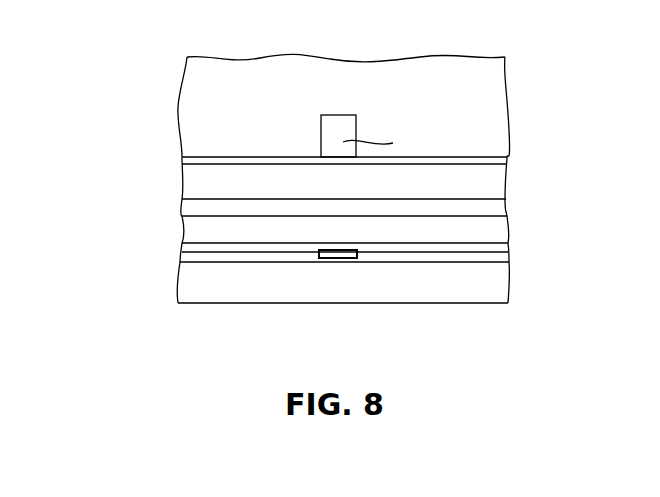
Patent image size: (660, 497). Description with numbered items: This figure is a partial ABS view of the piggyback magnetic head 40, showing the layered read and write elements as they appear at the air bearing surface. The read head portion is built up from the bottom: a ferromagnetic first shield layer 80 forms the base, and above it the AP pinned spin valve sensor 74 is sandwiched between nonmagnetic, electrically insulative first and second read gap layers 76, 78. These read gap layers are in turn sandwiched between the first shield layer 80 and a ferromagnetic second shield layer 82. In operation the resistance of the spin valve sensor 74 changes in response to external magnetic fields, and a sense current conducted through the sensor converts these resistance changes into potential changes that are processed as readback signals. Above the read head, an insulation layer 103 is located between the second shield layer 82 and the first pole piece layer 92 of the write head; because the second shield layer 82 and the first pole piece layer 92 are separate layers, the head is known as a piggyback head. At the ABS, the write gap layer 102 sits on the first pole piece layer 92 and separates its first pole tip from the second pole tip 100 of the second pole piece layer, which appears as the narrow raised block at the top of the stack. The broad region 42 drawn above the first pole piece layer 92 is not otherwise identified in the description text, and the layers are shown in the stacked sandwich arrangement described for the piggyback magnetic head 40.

The piggyback magnetic head 40 is at (527, 72).
The upper cladding region 42 is at (192, 83).
The second pole tip 100 is at (337, 123).
The write gap layer 102 is at (255, 160).
The first pole piece layer 92 is at (192, 180).
The insulation layer 103 is at (498, 208).
The second shield layer 82 is at (187, 232).
The second read gap layer 78 is at (465, 248).
The AP pinned spin valve sensor 74 is at (337, 258).
The first read gap layer 76 is at (242, 262).
The first shield layer 80 is at (497, 285).